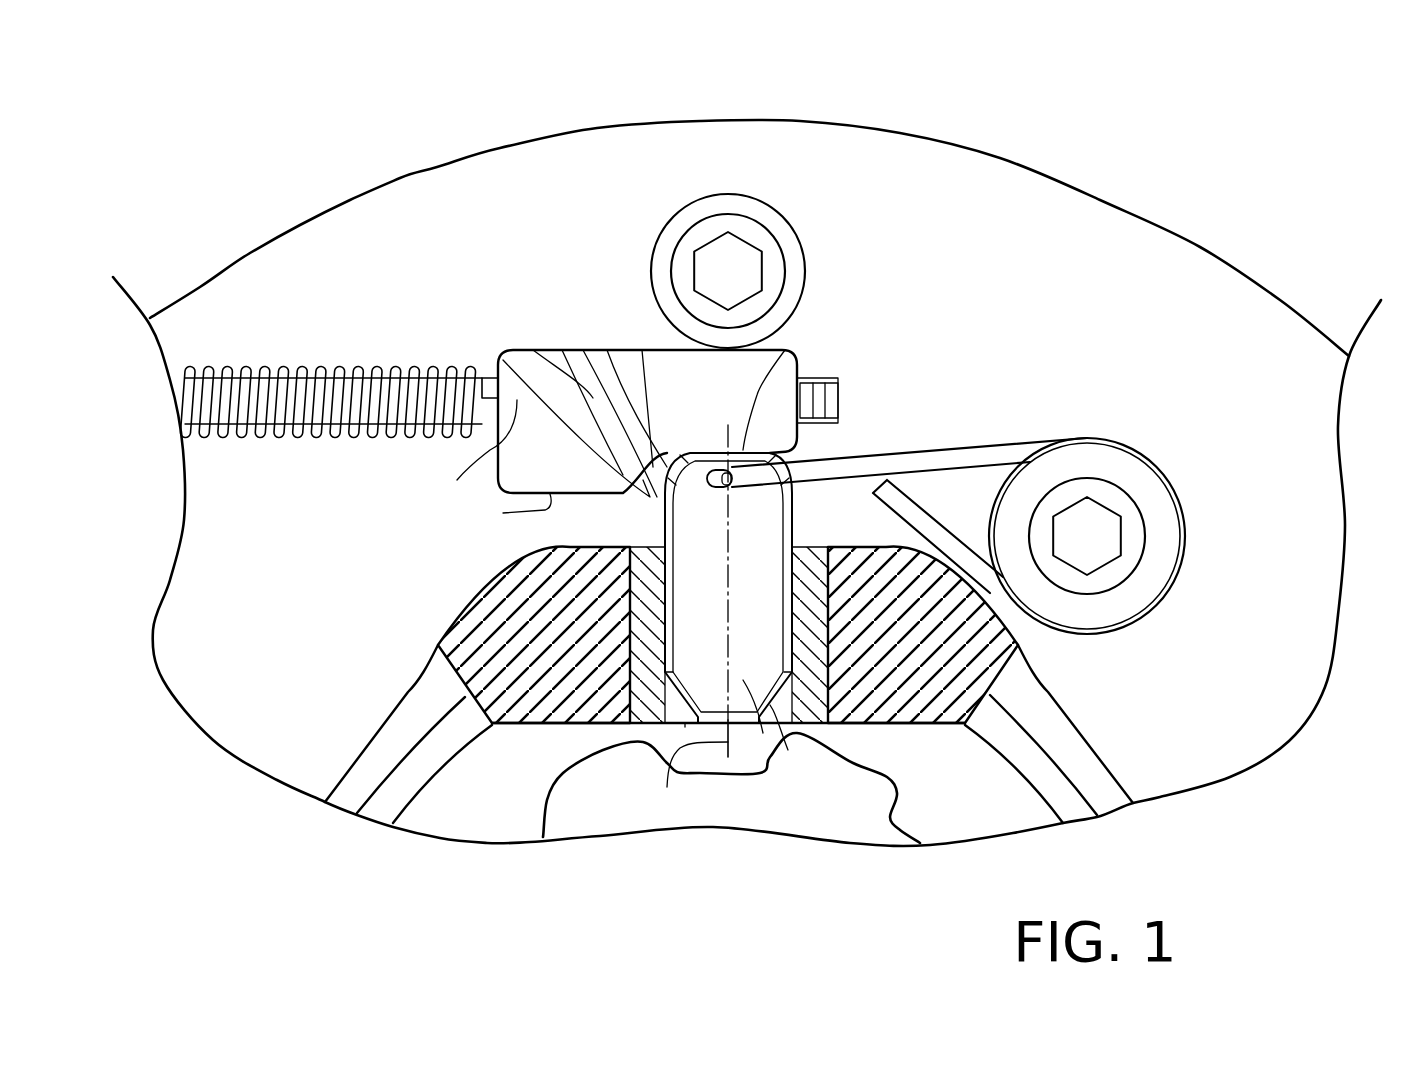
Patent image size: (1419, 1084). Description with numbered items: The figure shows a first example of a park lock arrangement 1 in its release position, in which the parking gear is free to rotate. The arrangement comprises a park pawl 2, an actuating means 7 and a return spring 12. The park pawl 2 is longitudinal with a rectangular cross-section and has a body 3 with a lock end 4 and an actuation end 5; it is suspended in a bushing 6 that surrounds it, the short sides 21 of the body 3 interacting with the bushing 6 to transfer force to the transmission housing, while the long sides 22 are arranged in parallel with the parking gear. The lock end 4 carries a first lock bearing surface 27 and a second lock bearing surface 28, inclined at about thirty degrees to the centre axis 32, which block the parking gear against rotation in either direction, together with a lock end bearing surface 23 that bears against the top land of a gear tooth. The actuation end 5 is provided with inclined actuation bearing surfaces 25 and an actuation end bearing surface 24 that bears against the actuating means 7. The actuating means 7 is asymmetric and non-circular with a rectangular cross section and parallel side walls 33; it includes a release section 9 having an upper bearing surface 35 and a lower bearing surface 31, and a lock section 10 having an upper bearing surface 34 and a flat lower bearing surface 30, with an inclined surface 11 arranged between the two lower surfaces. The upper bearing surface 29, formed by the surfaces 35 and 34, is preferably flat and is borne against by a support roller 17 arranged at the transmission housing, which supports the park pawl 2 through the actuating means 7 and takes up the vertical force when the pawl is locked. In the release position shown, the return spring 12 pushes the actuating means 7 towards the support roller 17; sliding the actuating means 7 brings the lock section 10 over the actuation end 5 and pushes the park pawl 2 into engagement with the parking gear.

The park lock arrangement 1 is at (1232, 148).
The park pawl 2 is at (812, 752).
The body 3 is at (693, 640).
The lock end 4 is at (707, 677).
The actuation end 5 is at (795, 527).
The bushing 6 is at (650, 623).
The actuating means 7 is at (498, 380).
The release section 9 is at (707, 388).
The lock section 10 is at (583, 350).
The inclined surface 11 is at (503, 360).
The return spring 12 is at (962, 460).
The support roller 17 is at (700, 195).
The short sides 21 is at (663, 520).
The long sides 22 is at (763, 733).
The lock end bearing surface 23 is at (753, 730).
The actuation end bearing surface 24 is at (757, 465).
The inclined actuation bearing surfaces 25 is at (607, 350).
The first lock bearing surface 27 is at (685, 727).
The second lock bearing surface 28 is at (788, 750).
The upper bearing surface 29 is at (533, 350).
The lower bearing surface of the lock section 30 is at (503, 513).
The lower bearing surface of the release section 31 is at (642, 350).
The centre axis 32 is at (667, 787).
The side walls 33 is at (457, 480).
The upper bearing surface of the lock section 34 is at (562, 350).
The upper bearing surface of the release section 35 is at (785, 350).